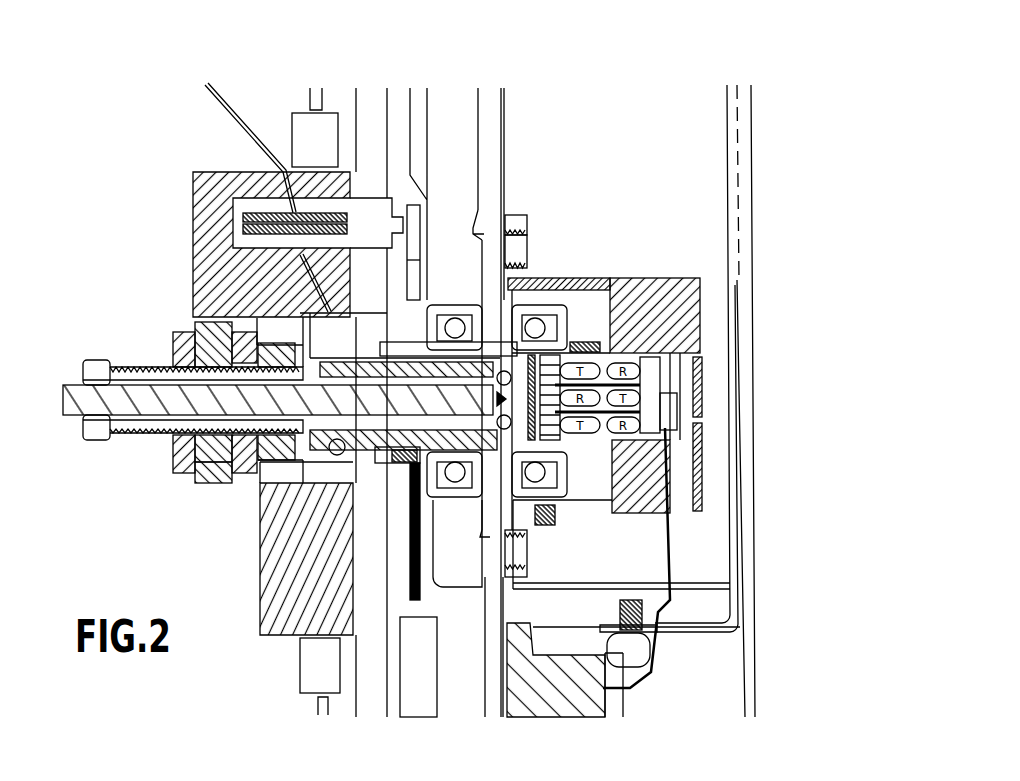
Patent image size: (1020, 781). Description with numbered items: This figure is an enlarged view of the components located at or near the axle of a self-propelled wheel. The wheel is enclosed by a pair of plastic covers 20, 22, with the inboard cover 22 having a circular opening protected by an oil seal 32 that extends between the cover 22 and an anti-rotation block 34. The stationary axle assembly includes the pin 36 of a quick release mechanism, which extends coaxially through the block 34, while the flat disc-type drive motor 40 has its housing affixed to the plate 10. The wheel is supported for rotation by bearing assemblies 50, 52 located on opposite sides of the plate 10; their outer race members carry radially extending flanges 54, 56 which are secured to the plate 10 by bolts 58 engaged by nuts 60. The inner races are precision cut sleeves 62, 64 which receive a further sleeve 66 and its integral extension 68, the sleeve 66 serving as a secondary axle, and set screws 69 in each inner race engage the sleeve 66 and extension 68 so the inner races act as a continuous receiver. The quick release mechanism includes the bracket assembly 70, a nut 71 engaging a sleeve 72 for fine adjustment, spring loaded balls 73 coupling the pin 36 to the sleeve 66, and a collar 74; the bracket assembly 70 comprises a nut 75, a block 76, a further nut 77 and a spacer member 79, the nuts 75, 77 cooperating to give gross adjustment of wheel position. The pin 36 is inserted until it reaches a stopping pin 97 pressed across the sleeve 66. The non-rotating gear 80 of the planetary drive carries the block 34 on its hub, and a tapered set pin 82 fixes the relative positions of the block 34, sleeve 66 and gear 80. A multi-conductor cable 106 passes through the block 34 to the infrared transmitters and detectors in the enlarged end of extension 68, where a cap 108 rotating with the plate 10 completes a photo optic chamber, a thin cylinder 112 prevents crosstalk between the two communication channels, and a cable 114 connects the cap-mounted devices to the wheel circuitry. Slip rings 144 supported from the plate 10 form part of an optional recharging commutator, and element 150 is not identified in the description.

The plate 10 is at (495, 188).
The outboard cosmetic cover 20 is at (746, 189).
The inboard cosmetic cover 22 is at (313, 100).
The oil seal 32 is at (310, 662).
The anti-rotation block 34 is at (215, 240).
The pin 36 is at (77, 393).
The drive motor 40 is at (523, 683).
The bearing assembly 50 is at (455, 328).
The bearing assembly 52 is at (535, 328).
The flange 54 is at (477, 207).
The flange 56 is at (508, 210).
The bolts 58 is at (522, 242).
The nuts 60 is at (520, 220).
The inner race defining member 62 is at (432, 347).
The inner race defining member 64 is at (565, 455).
The sleeve 66 is at (405, 462).
The sleeve extension 68 is at (482, 590).
The set screws 69 is at (580, 346).
The bracket assembly 70 is at (140, 457).
The nut 71 is at (97, 365).
The sleeve 72 is at (230, 382).
The balls 73 is at (512, 445).
The collar 74 is at (155, 367).
The nut 75 is at (194, 259).
The block 76 is at (213, 462).
The nut 77 is at (182, 458).
The spacer member 79 is at (207, 484).
The gear 80 is at (363, 112).
The tapered set pin 82 is at (333, 452).
The stopping pin 97 is at (528, 452).
The multi-conductor cable 106 is at (277, 168).
The cap 108 is at (700, 350).
The thin cylinder 112 is at (668, 505).
The multi-conductor cable 114 is at (662, 600).
The slip rings 144 is at (412, 210).
The spring 150 is at (257, 213).